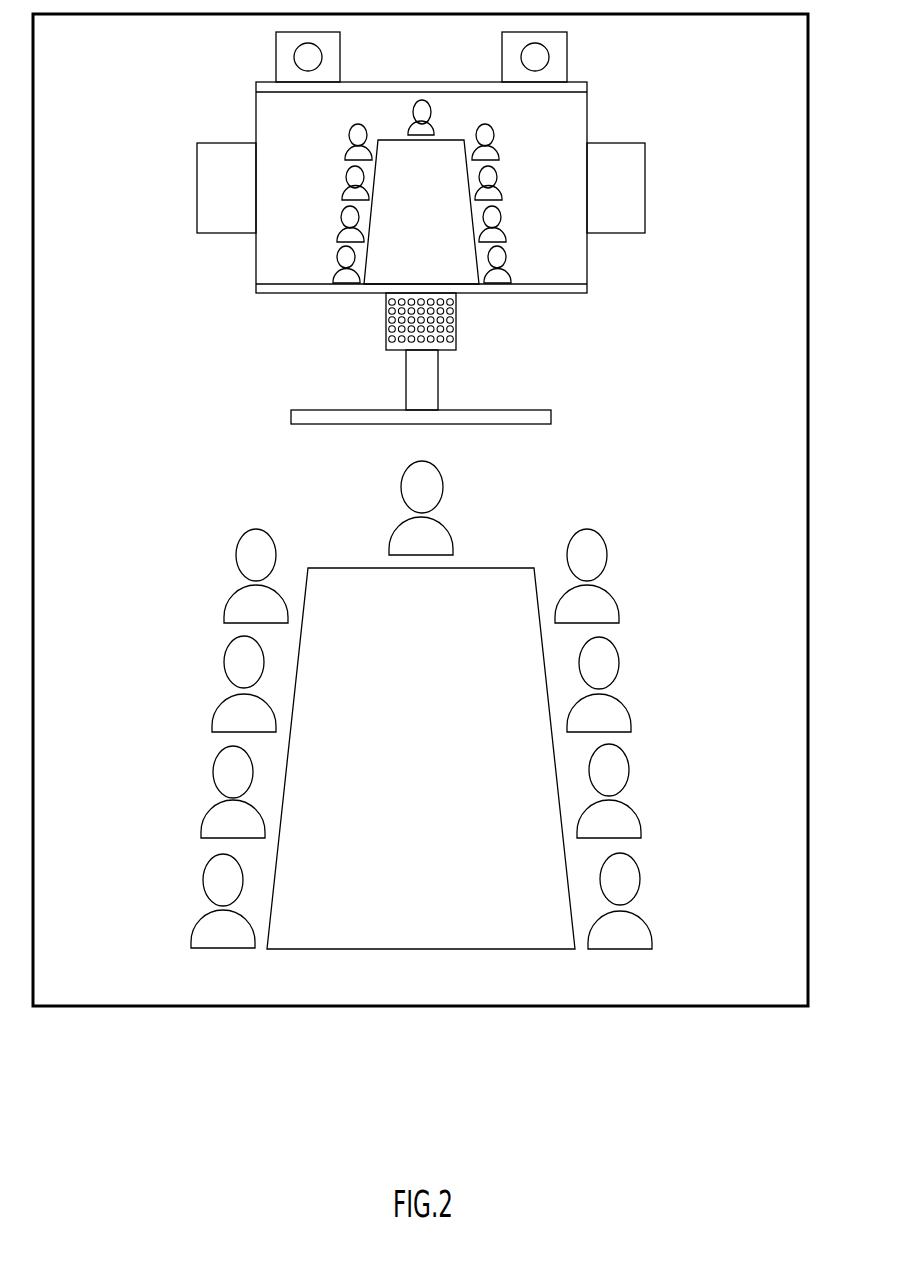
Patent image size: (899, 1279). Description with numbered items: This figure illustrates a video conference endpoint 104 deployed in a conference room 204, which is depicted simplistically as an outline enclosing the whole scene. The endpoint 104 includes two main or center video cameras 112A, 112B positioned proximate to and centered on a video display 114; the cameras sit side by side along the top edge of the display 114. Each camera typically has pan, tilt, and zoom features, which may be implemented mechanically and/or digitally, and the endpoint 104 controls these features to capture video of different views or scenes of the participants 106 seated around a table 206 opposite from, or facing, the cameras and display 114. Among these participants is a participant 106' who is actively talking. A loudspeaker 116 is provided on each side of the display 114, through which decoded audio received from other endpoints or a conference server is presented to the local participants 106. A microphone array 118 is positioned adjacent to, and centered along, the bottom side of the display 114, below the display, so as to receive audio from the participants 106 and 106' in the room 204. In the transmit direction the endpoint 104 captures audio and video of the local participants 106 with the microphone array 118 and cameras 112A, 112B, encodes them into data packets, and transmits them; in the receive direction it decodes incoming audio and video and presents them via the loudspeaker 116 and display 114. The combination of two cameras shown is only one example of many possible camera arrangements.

The conference room 204 is at (721, 66).
The video conference endpoint 104 is at (414, 220).
The main video camera 112A is at (276, 60).
The main video camera 112B is at (567, 60).
The video display 114 is at (588, 132).
The loudspeaker 116 is at (197, 188).
The microphone array 118 is at (456, 320).
The table 206 is at (434, 775).
The participants 106 is at (437, 705).
The actively talking participant 106' is at (616, 683).